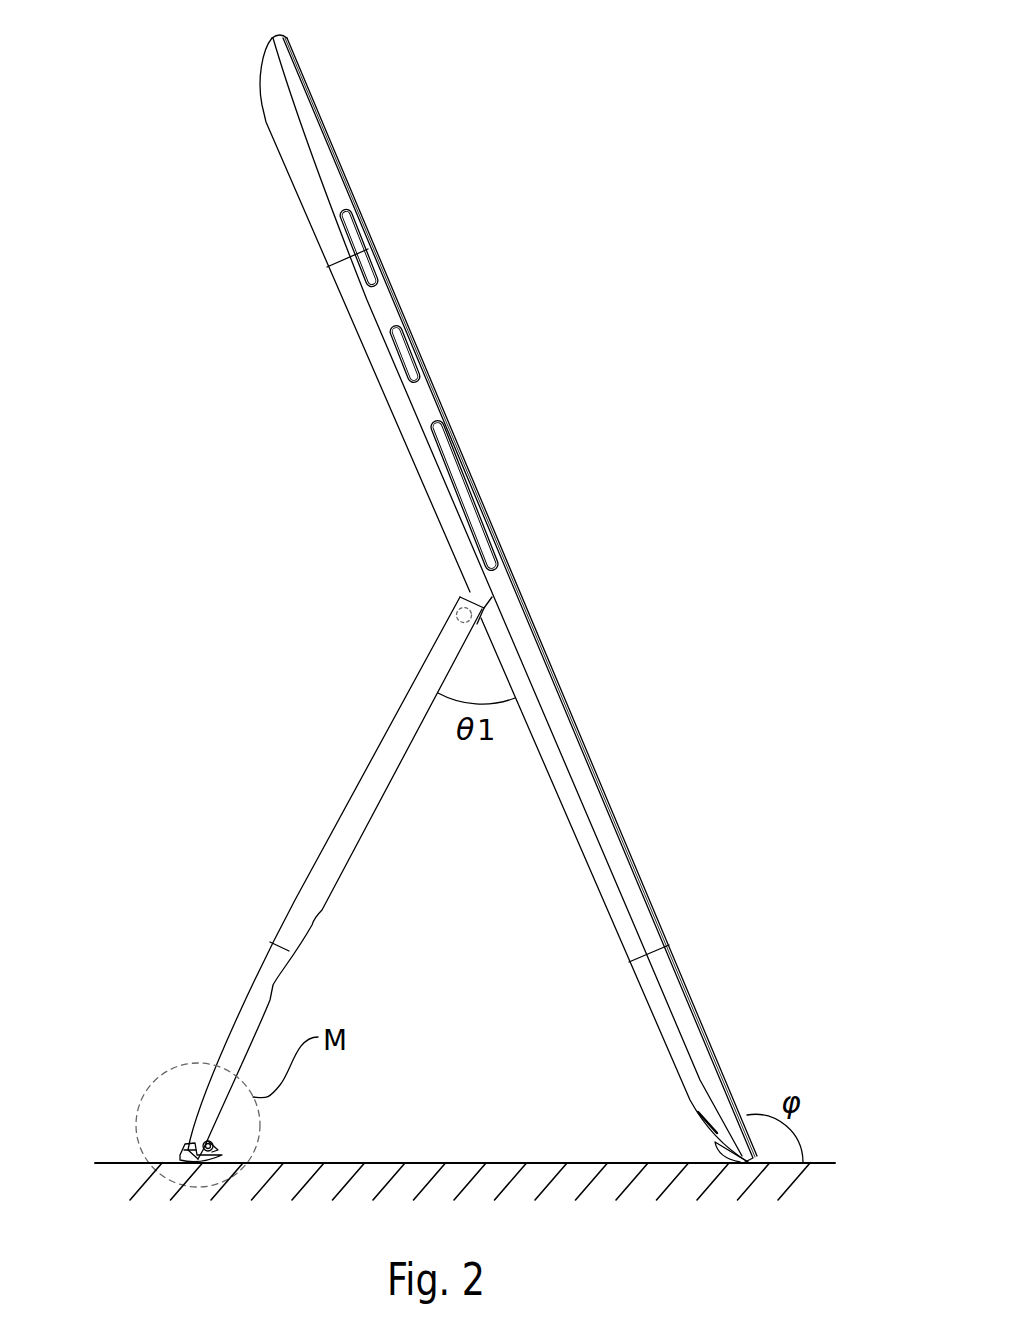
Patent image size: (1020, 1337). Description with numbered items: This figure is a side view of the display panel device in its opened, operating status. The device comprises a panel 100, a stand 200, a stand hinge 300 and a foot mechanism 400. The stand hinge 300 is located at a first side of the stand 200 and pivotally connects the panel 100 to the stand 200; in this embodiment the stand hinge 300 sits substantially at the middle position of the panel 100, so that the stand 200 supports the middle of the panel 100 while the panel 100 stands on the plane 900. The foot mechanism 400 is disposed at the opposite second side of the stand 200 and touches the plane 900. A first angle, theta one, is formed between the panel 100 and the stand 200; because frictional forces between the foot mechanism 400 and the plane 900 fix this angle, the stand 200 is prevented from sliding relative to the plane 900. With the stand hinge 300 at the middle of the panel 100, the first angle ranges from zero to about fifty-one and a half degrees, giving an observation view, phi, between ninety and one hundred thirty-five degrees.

The panel 100 is at (315, 133).
The stand 200 is at (355, 823).
The stand hinge 300 is at (456, 618).
The foot mechanism 400 is at (185, 1158).
The plane 900 is at (428, 1162).